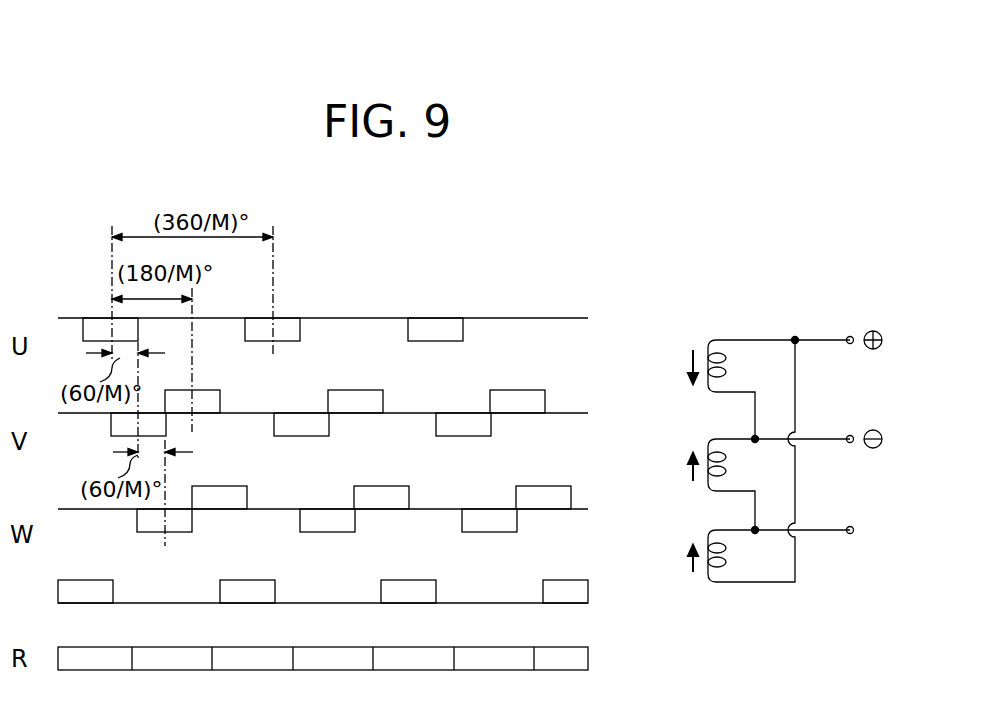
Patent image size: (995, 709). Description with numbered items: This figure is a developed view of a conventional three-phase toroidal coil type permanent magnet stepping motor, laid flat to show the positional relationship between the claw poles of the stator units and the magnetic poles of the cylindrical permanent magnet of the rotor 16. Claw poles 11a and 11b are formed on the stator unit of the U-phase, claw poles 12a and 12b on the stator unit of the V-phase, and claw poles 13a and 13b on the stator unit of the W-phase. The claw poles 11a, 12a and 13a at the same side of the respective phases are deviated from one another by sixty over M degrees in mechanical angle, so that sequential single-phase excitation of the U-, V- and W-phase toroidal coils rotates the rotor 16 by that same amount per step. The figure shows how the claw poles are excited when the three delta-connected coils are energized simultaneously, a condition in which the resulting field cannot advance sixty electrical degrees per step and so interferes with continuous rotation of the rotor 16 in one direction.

The claw pole 11a is at (556, 334).
The claw pole 11b is at (552, 401).
The claw pole 12a is at (556, 429).
The claw pole 12b is at (576, 497).
The claw pole 13a is at (556, 521).
The claw pole 13b is at (576, 596).
The rotor 16 is at (591, 657).